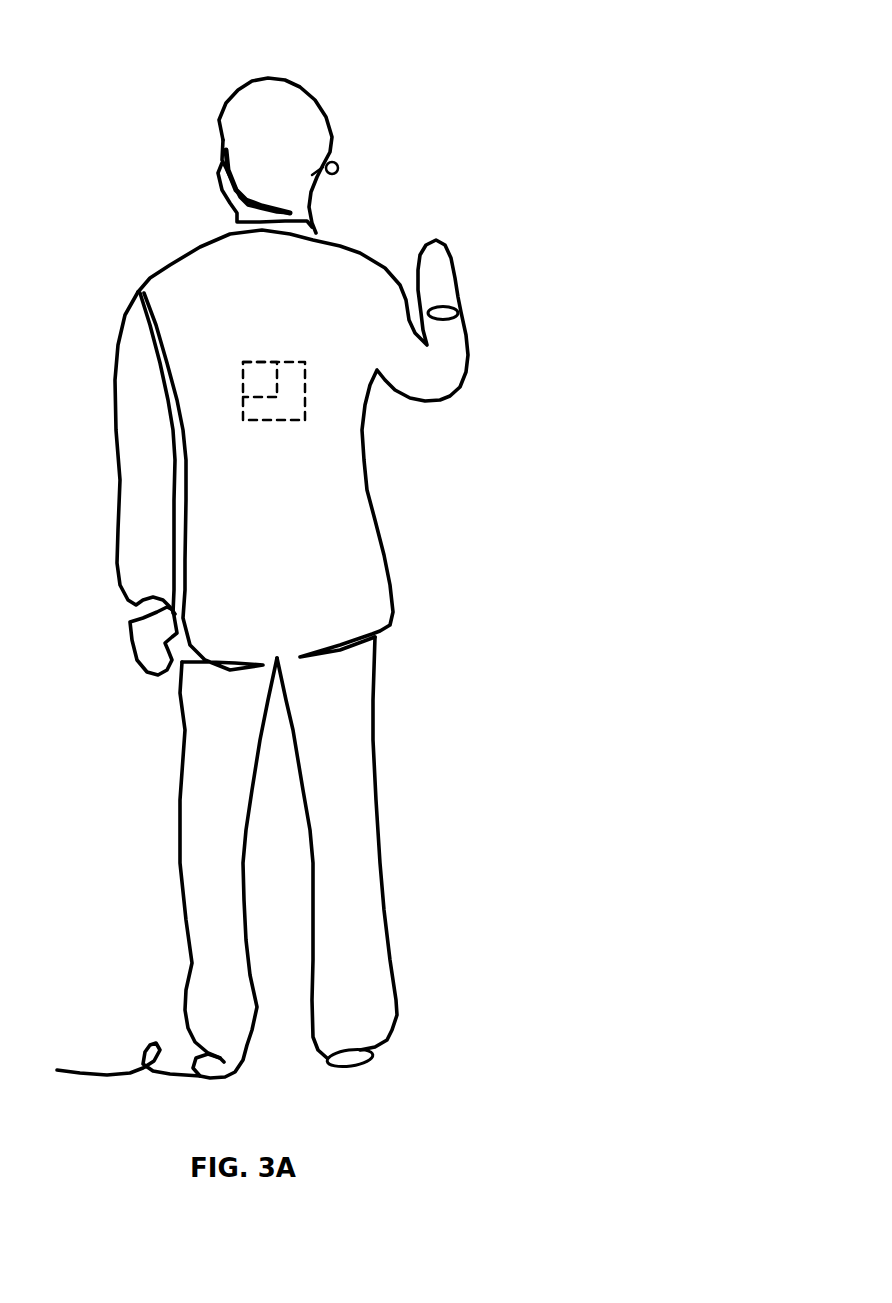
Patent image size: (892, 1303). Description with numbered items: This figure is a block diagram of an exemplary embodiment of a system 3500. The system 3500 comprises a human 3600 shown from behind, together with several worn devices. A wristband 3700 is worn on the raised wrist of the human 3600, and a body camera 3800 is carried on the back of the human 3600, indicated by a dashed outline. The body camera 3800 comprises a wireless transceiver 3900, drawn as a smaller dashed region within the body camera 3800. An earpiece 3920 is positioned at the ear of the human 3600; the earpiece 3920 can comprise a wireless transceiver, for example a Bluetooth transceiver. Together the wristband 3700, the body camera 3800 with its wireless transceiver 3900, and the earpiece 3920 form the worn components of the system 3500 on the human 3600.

The system 3500 is at (311, 51).
The human 3600 is at (333, 450).
The wristband 3700 is at (470, 310).
The body camera 3800 is at (315, 387).
The wireless transceiver 3900 is at (254, 372).
The earpiece 3920 is at (343, 160).